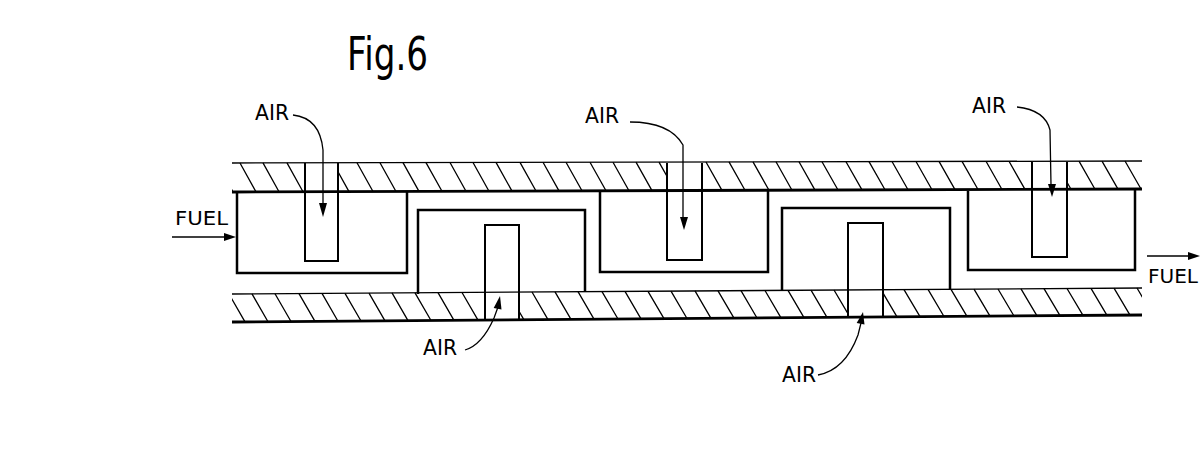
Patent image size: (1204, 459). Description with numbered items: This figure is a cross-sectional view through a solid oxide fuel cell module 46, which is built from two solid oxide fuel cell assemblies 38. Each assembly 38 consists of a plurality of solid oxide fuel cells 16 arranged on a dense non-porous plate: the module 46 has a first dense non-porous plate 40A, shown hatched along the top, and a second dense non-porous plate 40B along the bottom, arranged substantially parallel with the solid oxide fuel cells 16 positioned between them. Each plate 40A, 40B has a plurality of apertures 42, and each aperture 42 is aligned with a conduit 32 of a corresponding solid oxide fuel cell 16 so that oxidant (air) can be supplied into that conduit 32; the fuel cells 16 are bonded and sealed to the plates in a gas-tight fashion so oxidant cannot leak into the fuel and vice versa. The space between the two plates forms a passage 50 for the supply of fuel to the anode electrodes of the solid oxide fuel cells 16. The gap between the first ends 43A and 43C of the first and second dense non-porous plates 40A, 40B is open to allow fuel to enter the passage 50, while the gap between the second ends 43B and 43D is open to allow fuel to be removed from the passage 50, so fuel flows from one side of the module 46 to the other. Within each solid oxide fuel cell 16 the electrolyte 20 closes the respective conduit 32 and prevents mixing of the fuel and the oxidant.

The solid oxide fuel cell 16 is at (606, 195).
The electrolyte 20 is at (312, 273).
The conduit 32 is at (312, 243).
The solid oxide fuel cell assembly 38 is at (790, 165).
The first dense non-porous plate 40A is at (880, 168).
The second dense non-porous plate 40B is at (727, 308).
The aperture 42 is at (310, 182).
The first end of first dense non-porous plate 43A is at (236, 188).
The second end of first dense non-porous plate 43B is at (1132, 177).
The first end of second dense non-porous plate 43C is at (250, 310).
The second end of second dense non-porous plate 43D is at (1108, 305).
The solid oxide fuel cell module 46 is at (1135, 118).
The passage 50 is at (443, 202).